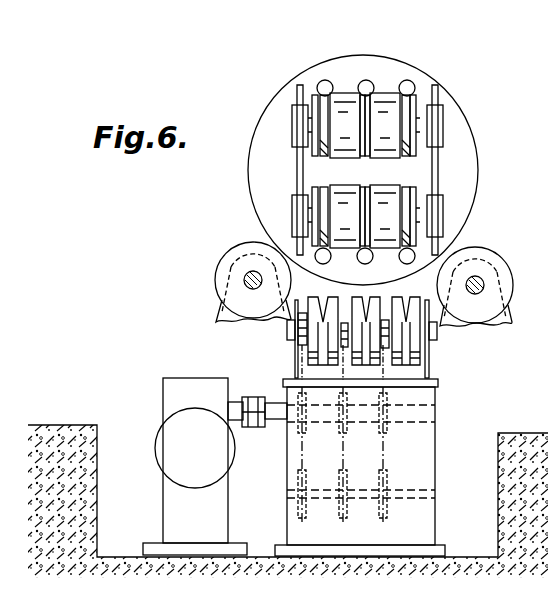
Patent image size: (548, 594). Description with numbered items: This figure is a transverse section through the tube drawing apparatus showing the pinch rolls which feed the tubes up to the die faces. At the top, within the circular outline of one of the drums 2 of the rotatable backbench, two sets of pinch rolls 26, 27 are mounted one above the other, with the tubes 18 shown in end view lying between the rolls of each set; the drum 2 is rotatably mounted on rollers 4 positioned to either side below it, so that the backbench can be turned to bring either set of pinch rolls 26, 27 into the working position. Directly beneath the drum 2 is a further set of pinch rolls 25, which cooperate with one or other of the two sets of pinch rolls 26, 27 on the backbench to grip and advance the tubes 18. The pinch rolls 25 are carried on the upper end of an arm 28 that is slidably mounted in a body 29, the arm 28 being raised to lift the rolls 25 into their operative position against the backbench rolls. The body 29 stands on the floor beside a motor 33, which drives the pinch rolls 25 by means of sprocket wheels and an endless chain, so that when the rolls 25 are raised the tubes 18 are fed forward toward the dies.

The drum 2 is at (467, 131).
The roller 4 is at (225, 272).
The tube 18 is at (412, 84).
The pinch roll 25 is at (398, 366).
The pinch roll set 26 is at (395, 185).
The pinch roll set 27 is at (398, 95).
The arm 28 is at (438, 383).
The body 29 is at (428, 398).
The motor 33 is at (215, 466).